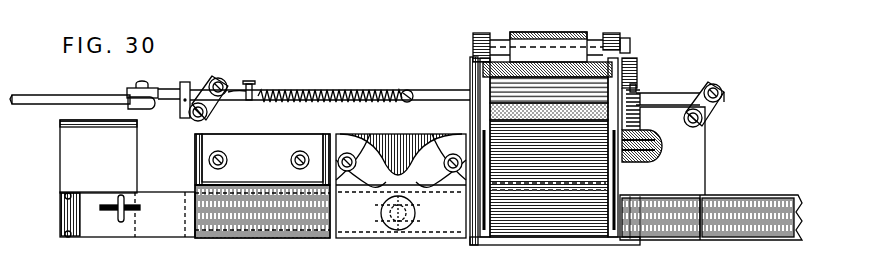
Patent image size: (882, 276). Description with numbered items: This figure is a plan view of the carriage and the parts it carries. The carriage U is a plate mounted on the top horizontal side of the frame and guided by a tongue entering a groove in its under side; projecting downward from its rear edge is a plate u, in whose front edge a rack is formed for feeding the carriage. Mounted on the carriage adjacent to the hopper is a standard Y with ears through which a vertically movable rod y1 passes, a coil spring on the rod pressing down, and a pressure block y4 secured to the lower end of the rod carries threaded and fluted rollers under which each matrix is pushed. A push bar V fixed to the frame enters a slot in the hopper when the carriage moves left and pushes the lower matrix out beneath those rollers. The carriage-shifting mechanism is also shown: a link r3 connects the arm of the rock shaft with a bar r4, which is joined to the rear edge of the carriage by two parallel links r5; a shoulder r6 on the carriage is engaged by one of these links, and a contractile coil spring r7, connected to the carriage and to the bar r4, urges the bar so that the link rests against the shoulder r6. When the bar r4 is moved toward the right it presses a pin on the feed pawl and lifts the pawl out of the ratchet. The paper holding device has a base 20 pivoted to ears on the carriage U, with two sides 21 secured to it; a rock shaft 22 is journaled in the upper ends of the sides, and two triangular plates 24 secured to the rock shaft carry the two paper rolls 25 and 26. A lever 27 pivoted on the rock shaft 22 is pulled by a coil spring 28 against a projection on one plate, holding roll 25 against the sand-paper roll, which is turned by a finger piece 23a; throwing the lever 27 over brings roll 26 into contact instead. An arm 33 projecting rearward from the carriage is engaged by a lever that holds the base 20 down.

The link r3 is at (60, 98).
The bar r4 is at (171, 89).
The parallel links r5 is at (212, 82).
The shoulder r6 is at (184, 103).
The contractile coil spring r7 is at (330, 90).
The carriage U is at (442, 175).
The plate u is at (98, 156).
The push bar V is at (127, 214).
The standard Y is at (401, 186).
The vertically movable rod y1 is at (382, 210).
The pressure block y4 is at (428, 213).
The base 20 is at (711, 217).
The sides 21 is at (632, 162).
The rock shaft 22 is at (576, 72).
The finger piece 23a is at (662, 162).
The triangular plates 24 is at (470, 118).
The paper roll 25 is at (549, 170).
The paper roll 26 is at (549, 90).
The lever 27 is at (480, 79).
The coil spring 28 is at (638, 119).
The arm 33 is at (551, 37).